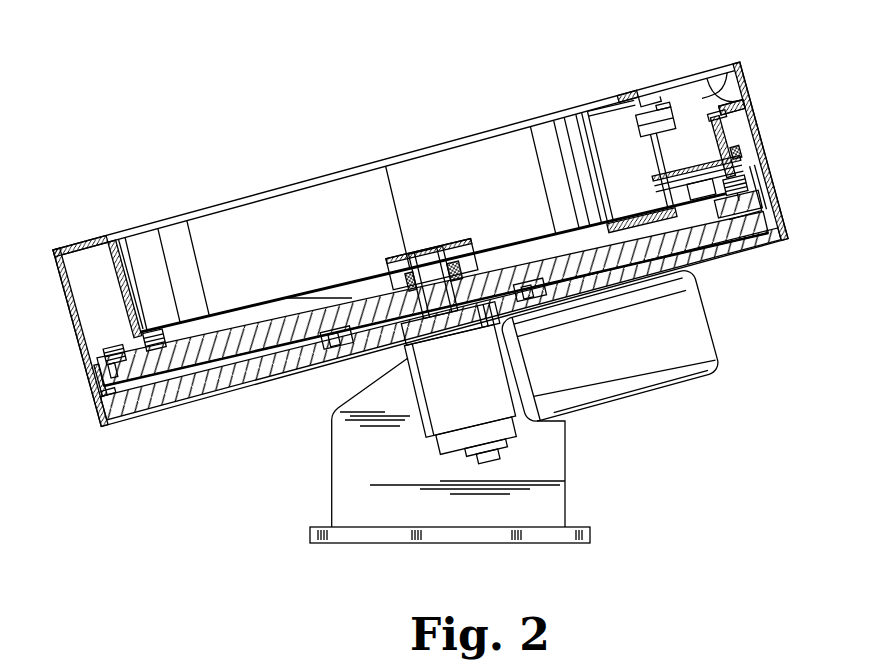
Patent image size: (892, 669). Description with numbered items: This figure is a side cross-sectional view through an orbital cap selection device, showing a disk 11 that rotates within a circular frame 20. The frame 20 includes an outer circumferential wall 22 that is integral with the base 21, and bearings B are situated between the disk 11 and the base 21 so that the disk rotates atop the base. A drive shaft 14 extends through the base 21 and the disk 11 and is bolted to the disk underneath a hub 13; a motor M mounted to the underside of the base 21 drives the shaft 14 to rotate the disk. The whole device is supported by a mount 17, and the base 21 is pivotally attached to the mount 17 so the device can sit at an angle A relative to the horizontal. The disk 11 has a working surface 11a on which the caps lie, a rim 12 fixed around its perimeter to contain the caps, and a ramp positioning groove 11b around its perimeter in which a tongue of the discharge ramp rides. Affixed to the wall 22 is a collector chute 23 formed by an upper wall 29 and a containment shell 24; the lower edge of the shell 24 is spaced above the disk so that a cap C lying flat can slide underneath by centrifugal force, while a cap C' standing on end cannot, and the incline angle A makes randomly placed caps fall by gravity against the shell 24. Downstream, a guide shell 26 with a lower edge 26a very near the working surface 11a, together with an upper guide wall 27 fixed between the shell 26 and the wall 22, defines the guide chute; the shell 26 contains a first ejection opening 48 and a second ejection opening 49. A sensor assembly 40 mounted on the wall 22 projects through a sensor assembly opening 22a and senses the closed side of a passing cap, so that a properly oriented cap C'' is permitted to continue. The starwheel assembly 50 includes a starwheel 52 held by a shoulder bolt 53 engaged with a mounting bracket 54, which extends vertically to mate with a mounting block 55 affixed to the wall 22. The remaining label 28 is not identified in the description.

The frame 20 is at (61, 244).
The base 21 is at (768, 233).
The outer circumferential wall 22 is at (60, 305).
The sensor assembly opening 22a is at (660, 100).
The upper wall 29 is at (110, 243).
The containment shell 24 is at (120, 258).
The collector chute 23 is at (139, 280).
The rim 12 is at (93, 381).
The disk 11 is at (178, 368).
The working surface 11a is at (272, 307).
The ramp positioning groove 11b is at (128, 402).
The angle A is at (298, 297).
The hub 13 is at (397, 256).
The drive shaft 14 is at (428, 251).
The bearings B is at (350, 346).
The cap C is at (111, 345).
The cap C' is at (152, 313).
The cap C'' is at (764, 175).
The block 28 is at (508, 178).
The guide shell 26 is at (601, 143).
The lower edge 26a is at (640, 213).
The upper guide wall 27 is at (674, 180).
The first ejection opening 48 is at (700, 183).
The second ejection opening 49 is at (727, 218).
The sensor assembly 40 is at (668, 108).
The starwheel assembly 50 is at (768, 147).
The starwheel 52 is at (727, 130).
The shoulder bolt 53 is at (740, 152).
The mounting bracket 54 is at (709, 105).
The mounting block 55 is at (727, 76).
The motor M is at (542, 428).
The mount 17 is at (340, 474).